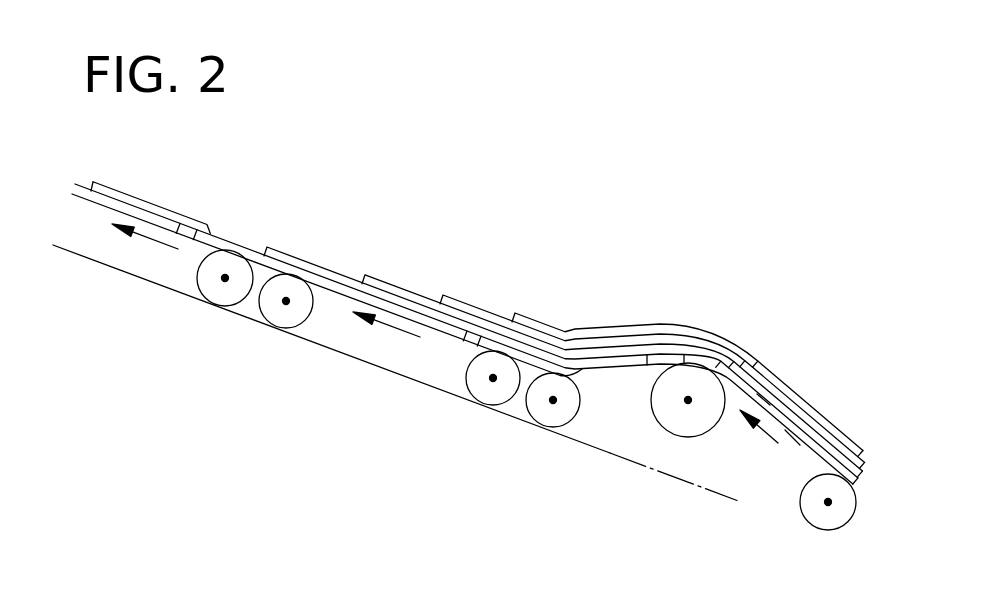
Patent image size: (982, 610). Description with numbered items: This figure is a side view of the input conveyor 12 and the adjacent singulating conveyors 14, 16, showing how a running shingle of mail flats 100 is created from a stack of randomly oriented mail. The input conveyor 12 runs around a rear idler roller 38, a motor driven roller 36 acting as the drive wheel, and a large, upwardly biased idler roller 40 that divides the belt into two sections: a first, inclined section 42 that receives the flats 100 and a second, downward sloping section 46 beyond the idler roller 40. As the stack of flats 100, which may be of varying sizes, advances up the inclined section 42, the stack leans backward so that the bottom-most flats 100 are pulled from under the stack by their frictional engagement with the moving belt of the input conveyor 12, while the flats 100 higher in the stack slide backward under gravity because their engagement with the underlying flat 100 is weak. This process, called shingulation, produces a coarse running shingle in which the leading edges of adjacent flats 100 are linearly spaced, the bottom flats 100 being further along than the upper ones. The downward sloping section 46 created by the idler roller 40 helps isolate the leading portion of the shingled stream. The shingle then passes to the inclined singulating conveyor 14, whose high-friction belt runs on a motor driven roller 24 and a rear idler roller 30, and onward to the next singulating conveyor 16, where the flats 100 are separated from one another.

The input conveyor 12 is at (737, 497).
The singulating conveyor 14 is at (365, 360).
The singulating conveyor 16 is at (147, 279).
The motor driven roller 24 is at (285, 315).
The rear idler roller 30 is at (477, 390).
The motor driven roller 36 is at (550, 412).
The rear idler roller 38 is at (818, 513).
The upwardly biased idler roller 40 is at (680, 438).
The inclined section 42 is at (780, 392).
The downward sloping section 46 is at (643, 352).
The flats 100 is at (577, 328).